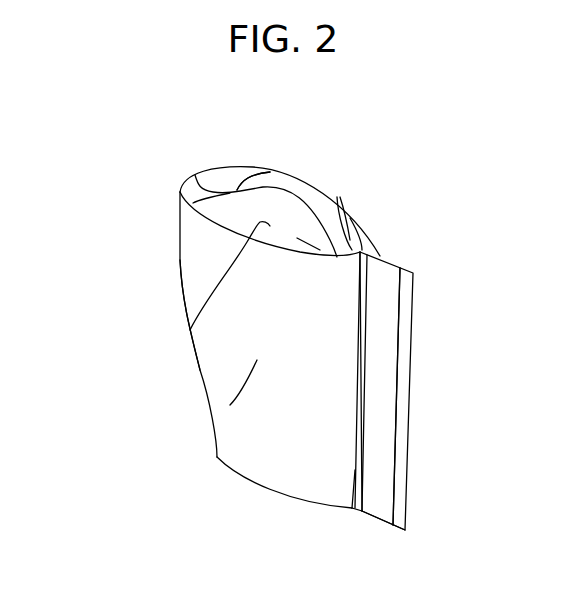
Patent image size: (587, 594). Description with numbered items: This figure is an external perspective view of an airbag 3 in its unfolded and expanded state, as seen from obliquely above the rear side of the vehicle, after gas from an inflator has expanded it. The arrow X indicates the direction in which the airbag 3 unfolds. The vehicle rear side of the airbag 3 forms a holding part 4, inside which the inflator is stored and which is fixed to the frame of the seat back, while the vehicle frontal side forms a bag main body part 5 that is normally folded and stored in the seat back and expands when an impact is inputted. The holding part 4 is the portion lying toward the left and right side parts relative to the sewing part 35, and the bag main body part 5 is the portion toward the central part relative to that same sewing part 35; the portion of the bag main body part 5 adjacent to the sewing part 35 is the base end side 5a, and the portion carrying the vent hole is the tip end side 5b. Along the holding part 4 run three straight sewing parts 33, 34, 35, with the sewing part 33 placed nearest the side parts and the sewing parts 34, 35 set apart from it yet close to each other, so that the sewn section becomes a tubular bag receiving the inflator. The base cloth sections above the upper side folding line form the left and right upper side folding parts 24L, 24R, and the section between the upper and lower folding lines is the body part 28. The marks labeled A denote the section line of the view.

The airbag 3 is at (400, 207).
The holding part 4 is at (382, 432).
The bag main body part 5 is at (217, 457).
The base end side 5a is at (352, 315).
The tip end side 5b is at (182, 300).
The right upper side folding part 24R is at (283, 180).
The left upper side folding part 24L is at (190, 330).
The body part 28 is at (257, 360).
The sewing part 33 is at (398, 383).
The sewing part 34 is at (360, 488).
The sewing part 35 is at (350, 468).
The arrow X is at (145, 198).
The section line A- A is at (328, 160).